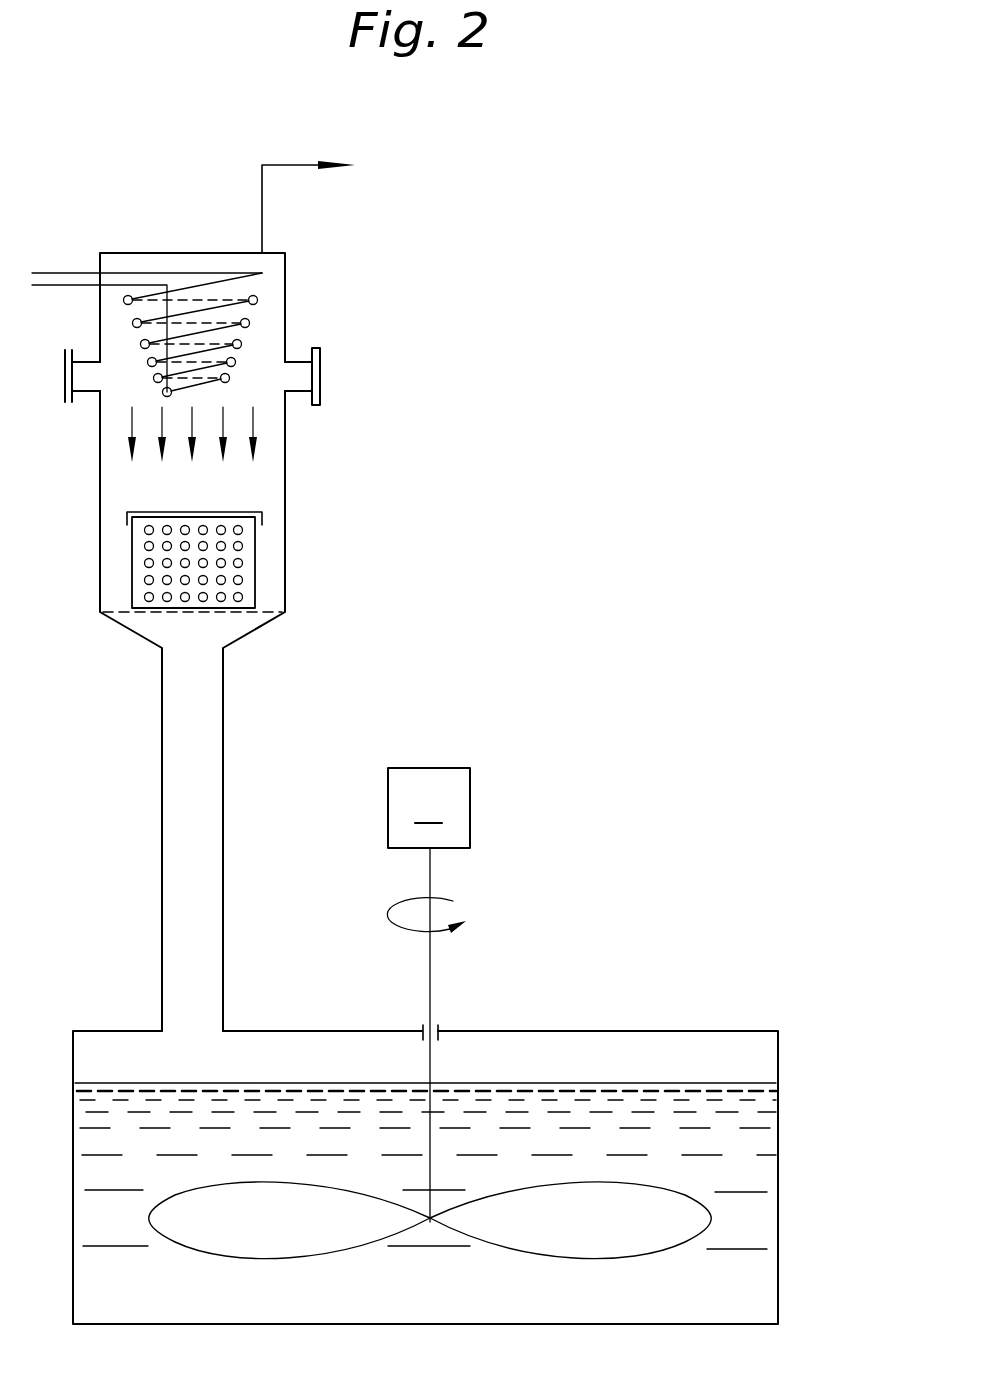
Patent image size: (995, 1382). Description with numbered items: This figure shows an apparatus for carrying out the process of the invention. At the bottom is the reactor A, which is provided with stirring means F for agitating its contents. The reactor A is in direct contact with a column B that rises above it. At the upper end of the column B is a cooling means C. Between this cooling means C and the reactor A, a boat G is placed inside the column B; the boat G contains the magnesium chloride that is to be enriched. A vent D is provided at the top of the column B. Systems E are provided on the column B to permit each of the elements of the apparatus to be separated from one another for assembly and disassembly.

The reactor A is at (778, 1167).
The column B is at (285, 468).
The cooling means C is at (249, 322).
The vent D is at (308, 165).
The systems E is at (320, 375).
The stirring means F is at (430, 1013).
The boat G is at (255, 557).